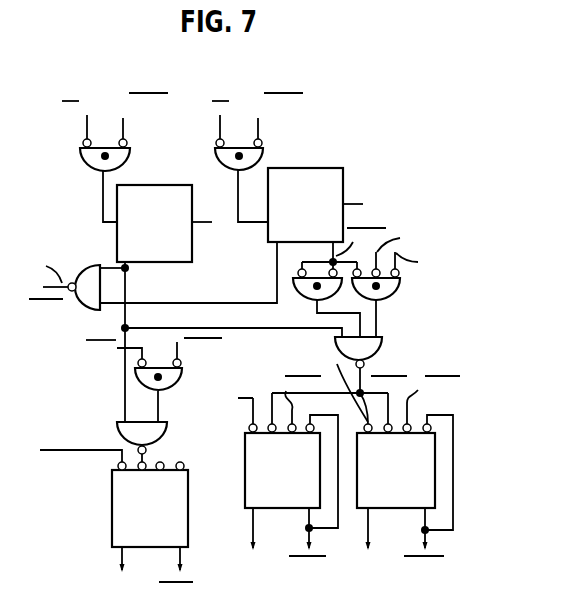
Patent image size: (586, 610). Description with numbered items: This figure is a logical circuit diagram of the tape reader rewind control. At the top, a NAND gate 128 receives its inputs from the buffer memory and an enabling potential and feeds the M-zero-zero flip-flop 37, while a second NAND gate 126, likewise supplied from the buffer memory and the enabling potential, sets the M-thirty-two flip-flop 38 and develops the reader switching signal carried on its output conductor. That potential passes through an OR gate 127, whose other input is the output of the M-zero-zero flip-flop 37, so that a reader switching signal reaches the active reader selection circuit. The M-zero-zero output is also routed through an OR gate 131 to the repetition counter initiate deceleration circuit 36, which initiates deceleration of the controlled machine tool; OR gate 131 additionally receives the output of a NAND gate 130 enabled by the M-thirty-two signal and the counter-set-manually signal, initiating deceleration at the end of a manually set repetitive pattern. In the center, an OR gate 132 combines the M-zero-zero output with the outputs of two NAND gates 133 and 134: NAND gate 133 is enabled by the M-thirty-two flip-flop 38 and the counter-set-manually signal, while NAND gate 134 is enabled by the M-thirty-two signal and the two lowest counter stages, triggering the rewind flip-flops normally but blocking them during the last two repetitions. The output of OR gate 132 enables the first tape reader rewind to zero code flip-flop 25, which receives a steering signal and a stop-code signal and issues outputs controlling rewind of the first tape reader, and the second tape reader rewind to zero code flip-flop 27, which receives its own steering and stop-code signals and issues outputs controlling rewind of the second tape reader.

The NAND gate 128 is at (115, 147).
The NAND gate 126 is at (252, 147).
The M-00 flip-flop 37 is at (183, 185).
The M-32 flip-flop 38 is at (343, 175).
The OR gate 127 is at (98, 262).
The NAND gate 133 is at (323, 297).
The NAND gate 134 is at (400, 285).
The OR gate 132 is at (381, 352).
The NAND gate 130 is at (182, 383).
The OR gate 131 is at (117, 425).
The repetition counter initiate deceleration circuit 36 is at (112, 517).
The first tape reader rewind to zero code flip-flop 25 is at (245, 478).
The second tape reader rewind to zero code flip-flop 27 is at (435, 463).